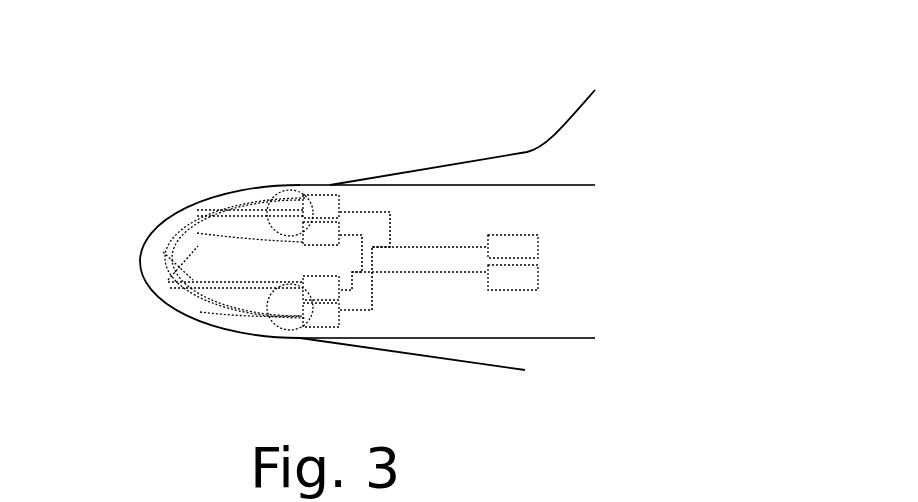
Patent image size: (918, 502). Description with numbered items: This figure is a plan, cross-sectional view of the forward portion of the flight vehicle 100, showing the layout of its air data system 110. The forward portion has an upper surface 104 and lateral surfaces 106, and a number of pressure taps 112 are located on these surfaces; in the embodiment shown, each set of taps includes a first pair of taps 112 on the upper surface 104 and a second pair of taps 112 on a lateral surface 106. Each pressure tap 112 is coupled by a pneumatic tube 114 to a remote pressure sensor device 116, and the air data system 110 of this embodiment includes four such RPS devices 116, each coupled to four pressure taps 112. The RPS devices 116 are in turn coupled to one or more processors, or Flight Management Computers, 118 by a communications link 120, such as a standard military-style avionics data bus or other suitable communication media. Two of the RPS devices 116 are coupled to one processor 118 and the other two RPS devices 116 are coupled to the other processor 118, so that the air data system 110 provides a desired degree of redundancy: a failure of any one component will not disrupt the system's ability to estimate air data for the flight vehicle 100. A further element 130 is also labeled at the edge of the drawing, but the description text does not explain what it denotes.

The flight vehicle 100 is at (170, 113).
The upper surface 104 is at (158, 257).
The lateral surfaces 106 is at (198, 210).
The air data system 110 is at (312, 135).
The pressure taps 112 is at (197, 213).
The pneumatic tube 114 is at (267, 203).
The remote pressure sensor (RPS) device 116 is at (338, 235).
The processors (Flight Management Computers) 118 is at (538, 252).
The communications link 120 is at (447, 247).
The aircraft component 130 is at (630, 501).